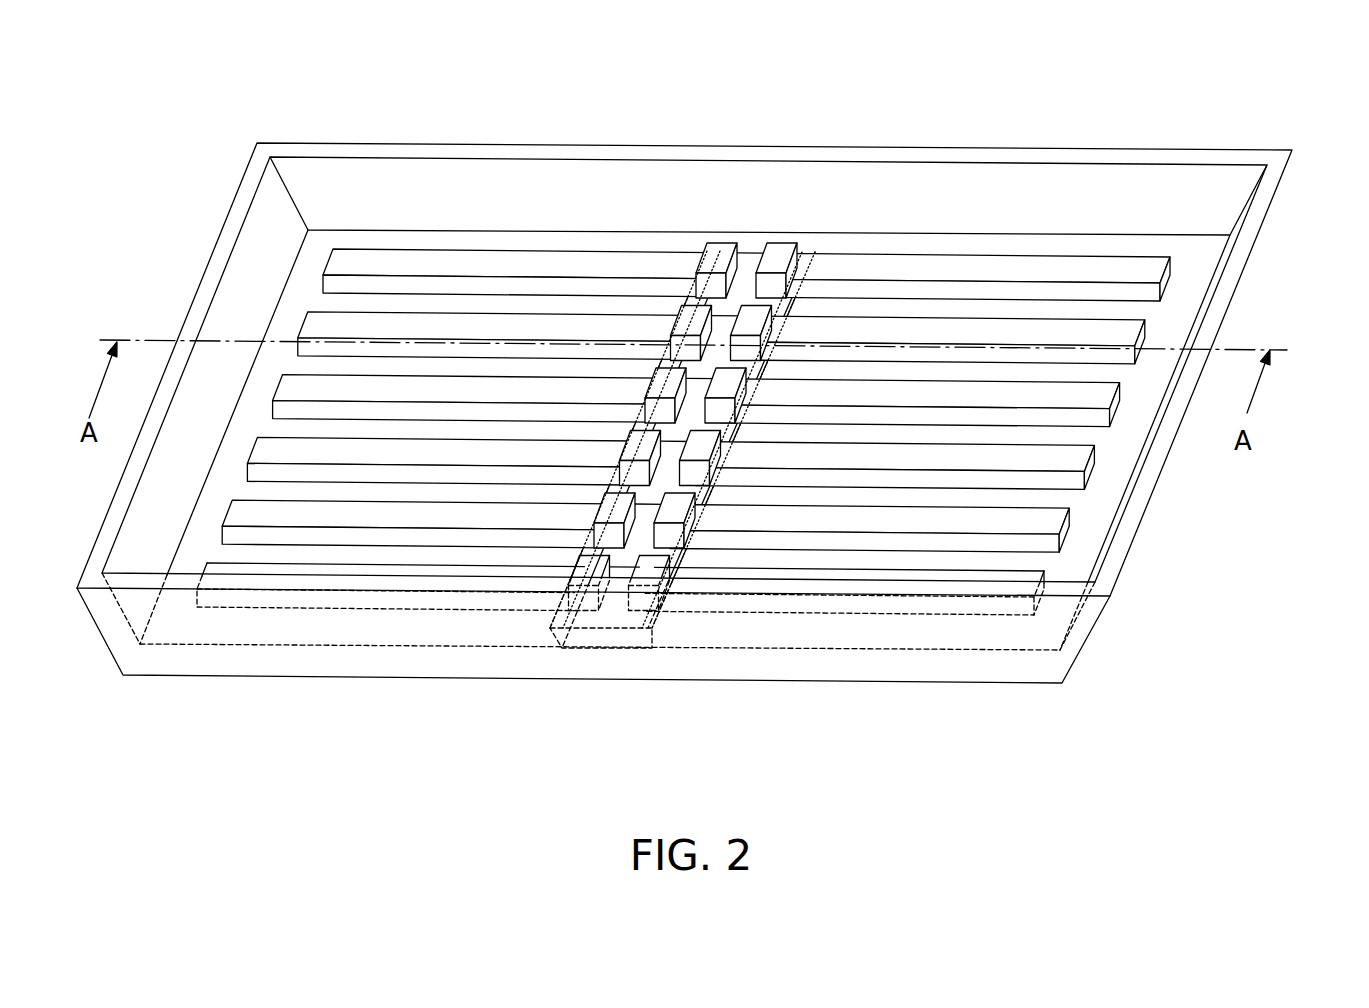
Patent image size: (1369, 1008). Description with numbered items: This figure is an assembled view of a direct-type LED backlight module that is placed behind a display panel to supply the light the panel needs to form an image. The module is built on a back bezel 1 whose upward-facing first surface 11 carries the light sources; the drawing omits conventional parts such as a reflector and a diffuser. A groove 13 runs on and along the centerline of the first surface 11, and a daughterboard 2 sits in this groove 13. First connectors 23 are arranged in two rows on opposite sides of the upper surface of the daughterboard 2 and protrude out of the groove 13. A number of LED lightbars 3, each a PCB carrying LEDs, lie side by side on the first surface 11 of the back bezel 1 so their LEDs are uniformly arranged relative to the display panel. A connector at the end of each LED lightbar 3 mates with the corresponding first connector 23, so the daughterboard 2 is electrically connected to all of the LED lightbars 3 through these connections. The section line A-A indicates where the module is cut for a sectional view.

The back bezel 1 is at (1265, 220).
The first surface 11 is at (1163, 242).
The daughterboard 2 is at (747, 280).
The groove 13 is at (810, 245).
The LED lightbar 3 is at (538, 267).
The first connector 23 is at (723, 242).